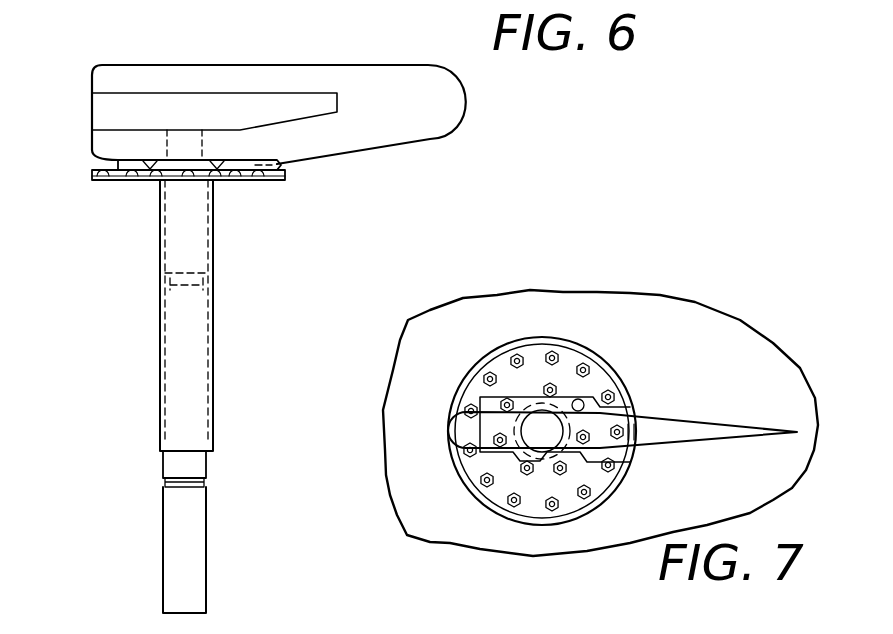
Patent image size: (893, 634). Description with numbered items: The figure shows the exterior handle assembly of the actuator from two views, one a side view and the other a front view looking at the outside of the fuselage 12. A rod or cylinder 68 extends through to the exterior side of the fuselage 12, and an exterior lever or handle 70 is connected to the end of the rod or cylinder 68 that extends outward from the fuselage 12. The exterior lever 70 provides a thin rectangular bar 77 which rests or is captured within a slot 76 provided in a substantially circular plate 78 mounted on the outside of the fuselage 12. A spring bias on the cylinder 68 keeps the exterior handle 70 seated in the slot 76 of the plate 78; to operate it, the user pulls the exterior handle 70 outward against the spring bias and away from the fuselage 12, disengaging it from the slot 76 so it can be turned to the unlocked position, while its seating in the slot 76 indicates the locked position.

In FIG. 7, the fuselage 12 is at (700, 349).
In FIG. 6, the rod or cylinder 68 is at (163, 530).
In FIG. 6, the exterior lever or handle 70 is at (337, 155).
In FIG. 7, the exterior lever or handle 70 is at (677, 420).
In FIG. 6, the slot 76 is at (120, 163).
In FIG. 7, the slot 76 is at (497, 445).
In FIG. 7, the thin rectangular bar 77 is at (625, 450).
In FIG. 6, the substantially circular plate 78 is at (85, 183).
In FIG. 7, the substantially circular plate 78 is at (545, 336).